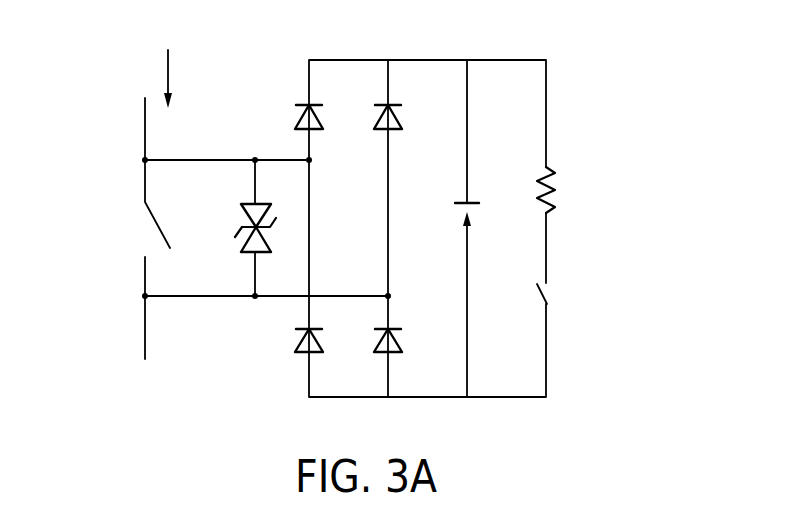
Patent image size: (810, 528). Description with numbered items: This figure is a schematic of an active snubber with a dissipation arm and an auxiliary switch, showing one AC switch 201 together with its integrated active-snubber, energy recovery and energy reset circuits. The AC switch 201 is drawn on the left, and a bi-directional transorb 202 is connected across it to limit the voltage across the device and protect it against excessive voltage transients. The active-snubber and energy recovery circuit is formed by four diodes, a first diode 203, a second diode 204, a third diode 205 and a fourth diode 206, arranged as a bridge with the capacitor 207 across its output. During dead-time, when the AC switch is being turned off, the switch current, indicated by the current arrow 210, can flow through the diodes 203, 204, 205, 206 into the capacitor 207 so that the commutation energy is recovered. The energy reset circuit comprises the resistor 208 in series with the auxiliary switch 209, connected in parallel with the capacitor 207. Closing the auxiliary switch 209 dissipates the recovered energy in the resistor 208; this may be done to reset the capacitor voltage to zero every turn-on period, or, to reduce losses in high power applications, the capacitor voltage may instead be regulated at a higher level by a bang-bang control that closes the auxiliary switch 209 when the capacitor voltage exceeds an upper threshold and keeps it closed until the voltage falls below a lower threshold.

The AC switch 201 is at (122, 178).
The bi-directional transorb 202 is at (243, 213).
The diode D1 203 is at (301, 103).
The diode D2 204 is at (400, 123).
The diode D3 205 is at (302, 355).
The diode D4 206 is at (400, 347).
The capacitor C1 207 is at (475, 211).
The resistor R1 208 is at (551, 177).
The auxiliary switch 209 is at (540, 283).
The current I 210 is at (166, 62).